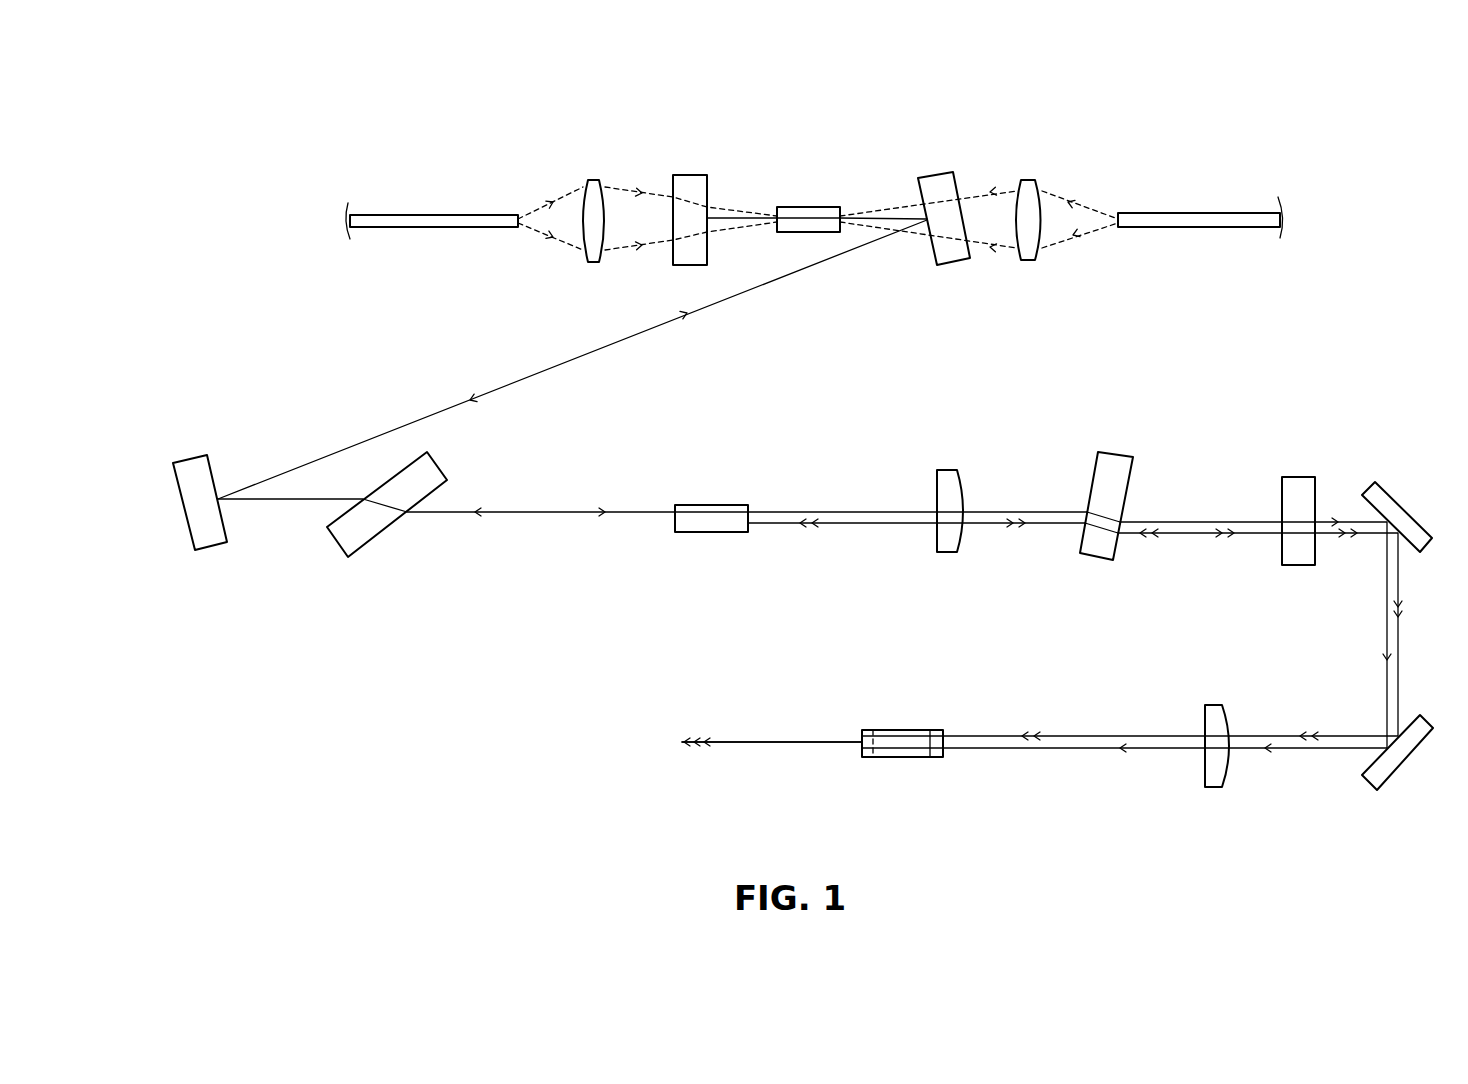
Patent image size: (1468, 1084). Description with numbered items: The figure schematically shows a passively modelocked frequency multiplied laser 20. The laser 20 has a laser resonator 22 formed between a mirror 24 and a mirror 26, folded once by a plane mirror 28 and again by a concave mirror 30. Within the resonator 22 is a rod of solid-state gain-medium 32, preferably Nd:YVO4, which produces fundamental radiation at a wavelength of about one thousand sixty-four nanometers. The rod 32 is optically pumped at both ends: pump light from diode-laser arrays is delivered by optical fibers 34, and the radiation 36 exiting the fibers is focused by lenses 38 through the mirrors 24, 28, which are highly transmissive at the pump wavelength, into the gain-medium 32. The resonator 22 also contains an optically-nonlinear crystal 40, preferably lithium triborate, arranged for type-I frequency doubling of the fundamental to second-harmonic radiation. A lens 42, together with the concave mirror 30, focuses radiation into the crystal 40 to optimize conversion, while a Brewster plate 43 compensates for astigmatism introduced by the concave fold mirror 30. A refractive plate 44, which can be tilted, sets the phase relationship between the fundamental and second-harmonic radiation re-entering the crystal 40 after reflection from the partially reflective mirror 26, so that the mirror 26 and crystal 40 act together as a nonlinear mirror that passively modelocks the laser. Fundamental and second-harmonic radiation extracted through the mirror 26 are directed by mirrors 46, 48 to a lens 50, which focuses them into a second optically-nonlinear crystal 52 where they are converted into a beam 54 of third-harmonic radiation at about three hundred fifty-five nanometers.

The passively modelocked frequency multiplied laser 20 is at (500, 752).
The laser resonator 22 is at (791, 201).
The mirror 24 is at (693, 175).
The mirror 26 is at (1296, 477).
The plane mirror 28 is at (935, 178).
The concave mirror 30 is at (203, 545).
The solid-state gain-medium 32 is at (833, 207).
The optical fibers 34 is at (443, 214).
The radiation 36 is at (565, 197).
The lenses 38 is at (594, 180).
The optically-nonlinear crystal 40 is at (697, 533).
The lens 42 is at (942, 553).
The Brewster plate 43 is at (377, 548).
The refractive plate 44 is at (1087, 555).
The mirror 46 is at (1390, 488).
The mirror 48 is at (1430, 718).
The lens 50 is at (1215, 788).
The optically-nonlinear crystal 52 is at (910, 758).
The beam of third-harmonic radiation 54 is at (752, 741).